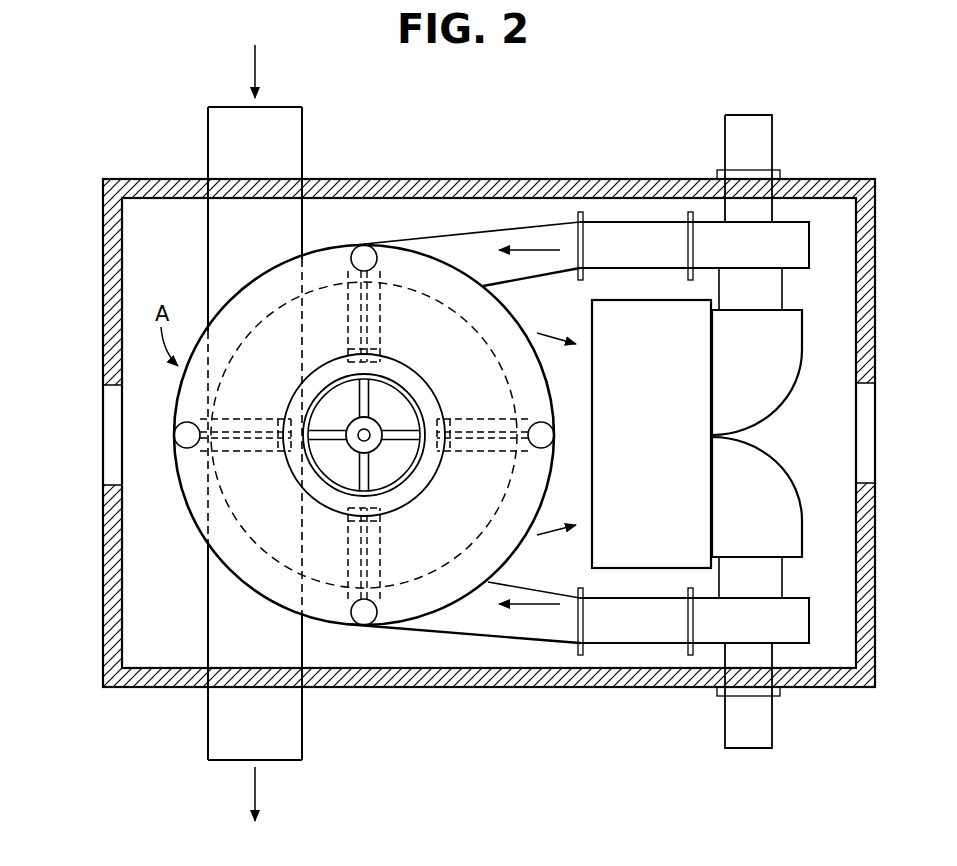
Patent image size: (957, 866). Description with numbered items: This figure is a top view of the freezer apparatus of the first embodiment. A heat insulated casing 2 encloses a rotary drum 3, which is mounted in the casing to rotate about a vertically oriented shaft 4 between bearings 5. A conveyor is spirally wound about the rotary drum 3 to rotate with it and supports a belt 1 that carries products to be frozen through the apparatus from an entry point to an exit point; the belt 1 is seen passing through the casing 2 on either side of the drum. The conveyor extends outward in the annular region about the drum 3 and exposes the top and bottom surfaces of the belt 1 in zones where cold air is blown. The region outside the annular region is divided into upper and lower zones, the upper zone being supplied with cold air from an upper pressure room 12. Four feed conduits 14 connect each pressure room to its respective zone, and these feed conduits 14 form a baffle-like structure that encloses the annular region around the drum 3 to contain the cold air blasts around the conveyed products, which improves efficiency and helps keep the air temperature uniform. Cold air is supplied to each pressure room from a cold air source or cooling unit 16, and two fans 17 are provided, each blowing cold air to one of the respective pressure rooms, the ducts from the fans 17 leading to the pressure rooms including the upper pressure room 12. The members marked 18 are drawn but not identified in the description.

The belt 1 is at (226, 232).
The heat insulated casing 2 is at (112, 238).
The rotary drum 3 is at (328, 390).
The shaft 4 is at (358, 438).
The bearings 5 is at (370, 429).
The upper pressure room 12 is at (198, 493).
The feed conduits 14 is at (362, 250).
The cooling unit 16 is at (757, 400).
The fans 17 is at (710, 242).
The rod brackets 18 is at (379, 356).